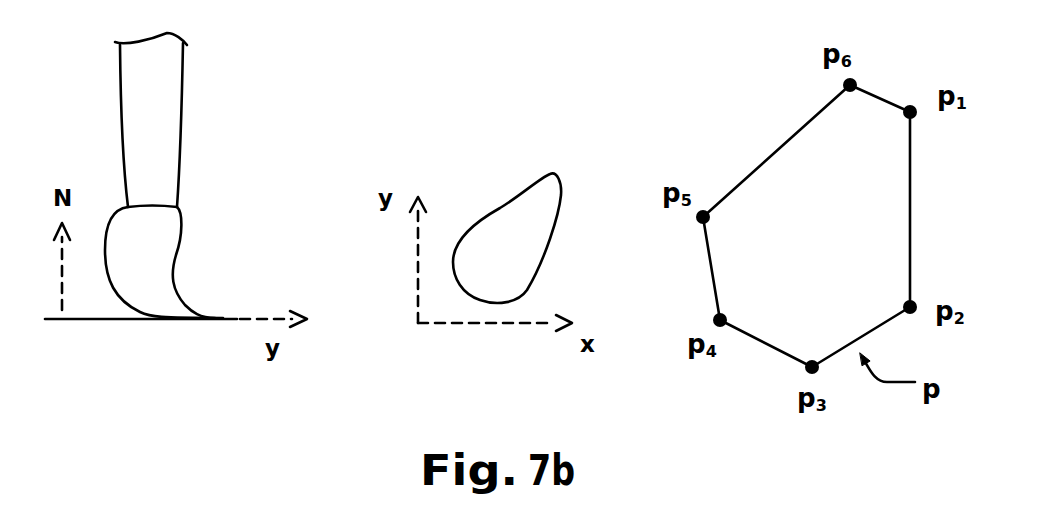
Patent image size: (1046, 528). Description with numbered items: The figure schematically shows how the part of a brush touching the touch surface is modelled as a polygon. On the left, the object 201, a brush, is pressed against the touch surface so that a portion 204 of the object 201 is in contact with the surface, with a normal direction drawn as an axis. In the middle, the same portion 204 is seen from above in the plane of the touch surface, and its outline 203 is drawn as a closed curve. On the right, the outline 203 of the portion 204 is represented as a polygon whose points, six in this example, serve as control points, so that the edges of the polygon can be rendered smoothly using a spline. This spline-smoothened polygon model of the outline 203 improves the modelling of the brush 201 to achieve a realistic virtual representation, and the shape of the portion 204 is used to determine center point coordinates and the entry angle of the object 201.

The object 201 is at (177, 237).
The outline 203 is at (503, 307).
The portion of the object in contact with the touch surface 204 is at (192, 322).